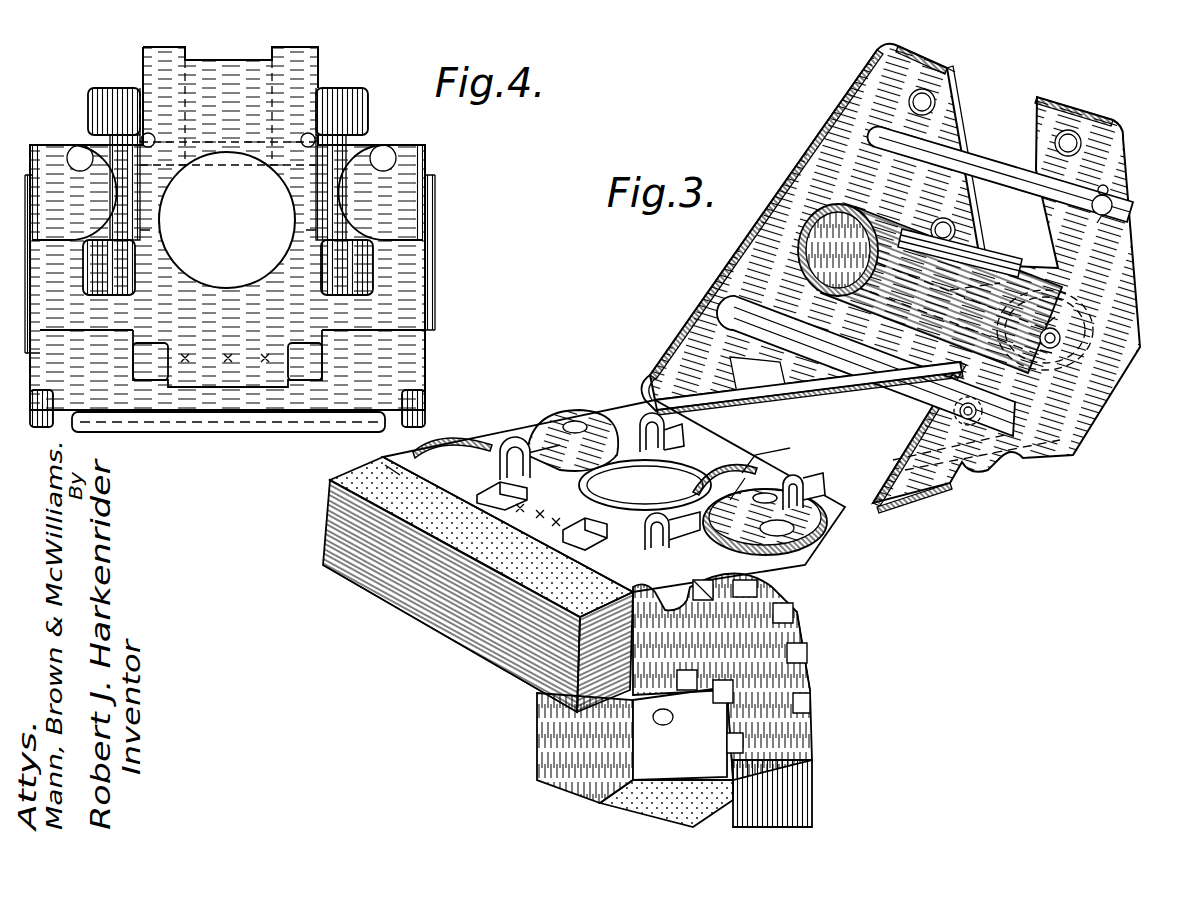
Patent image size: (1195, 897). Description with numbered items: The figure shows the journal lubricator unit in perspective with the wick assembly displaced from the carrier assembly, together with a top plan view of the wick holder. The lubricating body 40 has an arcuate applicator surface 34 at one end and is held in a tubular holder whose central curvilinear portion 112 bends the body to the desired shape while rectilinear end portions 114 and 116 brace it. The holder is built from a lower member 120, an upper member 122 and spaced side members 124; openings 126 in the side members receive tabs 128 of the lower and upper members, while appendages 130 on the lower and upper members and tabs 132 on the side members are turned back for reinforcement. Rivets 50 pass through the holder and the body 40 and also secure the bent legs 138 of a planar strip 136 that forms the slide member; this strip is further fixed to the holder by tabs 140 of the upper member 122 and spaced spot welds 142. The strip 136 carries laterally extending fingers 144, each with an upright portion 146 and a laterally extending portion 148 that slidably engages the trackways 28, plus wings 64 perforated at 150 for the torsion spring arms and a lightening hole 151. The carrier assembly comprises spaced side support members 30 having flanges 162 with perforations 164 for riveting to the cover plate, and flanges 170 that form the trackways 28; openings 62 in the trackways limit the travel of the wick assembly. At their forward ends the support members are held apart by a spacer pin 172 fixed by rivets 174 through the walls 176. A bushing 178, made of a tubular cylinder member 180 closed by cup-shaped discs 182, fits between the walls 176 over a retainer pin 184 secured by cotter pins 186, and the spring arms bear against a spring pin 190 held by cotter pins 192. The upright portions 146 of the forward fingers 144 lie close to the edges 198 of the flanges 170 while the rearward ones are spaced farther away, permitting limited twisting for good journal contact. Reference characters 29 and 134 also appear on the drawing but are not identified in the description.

In FIG. 3, the trackways 28 is at (693, 386).
In FIG. 3, the spring clip assembly 29 is at (817, 644).
In FIG. 3, the side support members 30 is at (793, 168).
In FIG. 3, the applicator surface 34 is at (440, 613).
In FIG. 3, the lubricating body 40 is at (805, 790).
In FIG. 3, the rivets 50 is at (660, 725).
In FIG. 3, the opening 62 is at (740, 358).
In FIG. 4, the wing 64 is at (430, 150).
In FIG. 3, the wing 64 is at (565, 410).
In FIG. 3, the central curvilinear portion 112 is at (800, 627).
In FIG. 3, the rectilinear end portion 114 is at (653, 660).
In FIG. 3, the rectilinear end portion 116 is at (800, 745).
In FIG. 3, the lower member 120 is at (700, 707).
In FIG. 3, the upper member 122 is at (427, 527).
In FIG. 3, the side members 124 is at (780, 677).
In FIG. 3, the openings 126 is at (700, 600).
In FIG. 3, the tabs 128 is at (800, 655).
In FIG. 4, the appendages 130 is at (190, 420).
In FIG. 3, the appendages 130 is at (345, 508).
In FIG. 3, the tabs 132 is at (385, 463).
In FIG. 4, the corner lug 134 is at (60, 398).
In FIG. 3, the planar strip 136 is at (577, 466).
In FIG. 3, the legs 138 is at (920, 575).
In FIG. 4, the tabs 140 is at (150, 345).
In FIG. 3, the tabs 140 is at (505, 488).
In FIG. 4, the spot welds 142 is at (262, 350).
In FIG. 3, the spot welds 142 is at (520, 520).
In FIG. 4, the fingers 144 is at (118, 90).
In FIG. 3, the fingers 144 is at (505, 445).
In FIG. 4, the upright portion 146 is at (135, 107).
In FIG. 3, the upright portion 146 is at (645, 485).
In FIG. 4, the laterally extending portion 148 is at (90, 100).
In FIG. 3, the laterally extending portion 148 is at (495, 430).
In FIG. 4, the perforations 150 is at (70, 150).
In FIG. 3, the perforations 150 is at (583, 420).
In FIG. 4, the lightening hole 151 is at (262, 280).
In FIG. 3, the lightening hole 151 is at (742, 473).
In FIG. 3, the flanges 162 is at (930, 62).
In FIG. 3, the perforations 164 is at (935, 100).
In FIG. 3, the flanges 170 is at (810, 382).
In FIG. 3, the spacer pin 172 is at (740, 305).
In FIG. 3, the rivets 174 is at (978, 411).
In FIG. 3, the walls 176 is at (832, 112).
In FIG. 3, the bushing 178 is at (997, 262).
In FIG. 3, the tubular cylinder member 180 is at (938, 220).
In FIG. 3, the cup-shaped discs 182 is at (850, 215).
In FIG. 3, the retainer pin 184 is at (1058, 348).
In FIG. 3, the cotter pins 186 is at (1058, 290).
In FIG. 3, the spring pin 190 is at (975, 165).
In FIG. 3, the cotter pins 192 is at (1112, 200).
In FIG. 3, the edges 198 is at (755, 455).